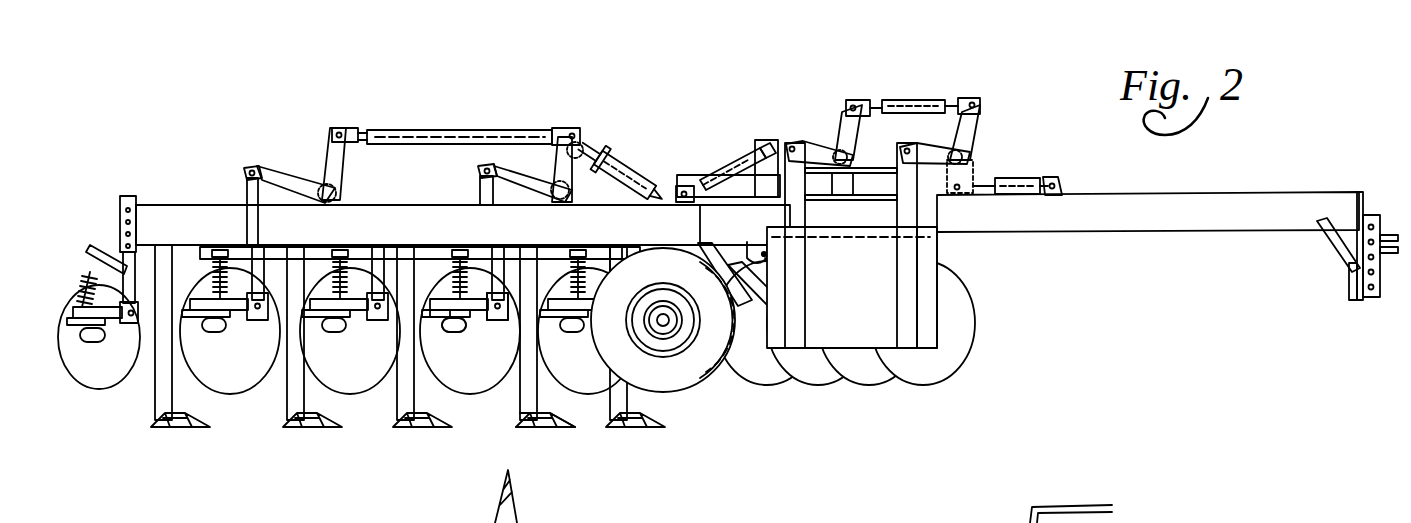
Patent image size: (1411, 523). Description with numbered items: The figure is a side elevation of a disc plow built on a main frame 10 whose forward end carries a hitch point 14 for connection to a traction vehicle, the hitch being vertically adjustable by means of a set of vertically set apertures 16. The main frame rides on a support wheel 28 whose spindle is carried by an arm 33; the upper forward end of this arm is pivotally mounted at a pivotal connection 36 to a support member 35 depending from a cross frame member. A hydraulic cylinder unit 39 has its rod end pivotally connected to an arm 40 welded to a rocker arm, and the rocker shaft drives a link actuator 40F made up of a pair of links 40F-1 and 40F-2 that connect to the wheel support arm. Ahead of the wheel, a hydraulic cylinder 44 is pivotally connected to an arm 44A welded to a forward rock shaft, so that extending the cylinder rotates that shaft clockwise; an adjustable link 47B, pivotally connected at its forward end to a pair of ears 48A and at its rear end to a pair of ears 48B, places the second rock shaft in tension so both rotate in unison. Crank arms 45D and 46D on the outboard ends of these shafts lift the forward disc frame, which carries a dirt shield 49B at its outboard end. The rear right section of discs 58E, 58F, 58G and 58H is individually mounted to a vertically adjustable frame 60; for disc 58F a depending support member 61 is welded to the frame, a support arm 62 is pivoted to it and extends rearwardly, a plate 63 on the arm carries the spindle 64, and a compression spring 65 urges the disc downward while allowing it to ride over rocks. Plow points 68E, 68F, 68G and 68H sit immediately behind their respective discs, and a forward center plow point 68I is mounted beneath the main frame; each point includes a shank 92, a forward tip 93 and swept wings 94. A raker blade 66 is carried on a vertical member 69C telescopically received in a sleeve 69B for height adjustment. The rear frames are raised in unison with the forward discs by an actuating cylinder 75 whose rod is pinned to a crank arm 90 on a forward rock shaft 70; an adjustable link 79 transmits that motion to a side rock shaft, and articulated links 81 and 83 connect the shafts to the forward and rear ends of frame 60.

The main frame 10 is at (1165, 190).
The hitch point 14 is at (1373, 208).
The vertically set apertures 16 is at (1380, 253).
The second support wheel 28 is at (683, 392).
The arm 33 is at (710, 366).
The support member 35 is at (740, 245).
The pivotal connection 36 is at (766, 255).
The hydraulic cylinder unit 39 is at (745, 165).
The arm 40 is at (775, 140).
The link actuator 40F is at (700, 175).
The link 40F-1 is at (735, 190).
The link 40F-2 is at (700, 248).
The hydraulic cylinder 44 is at (1028, 178).
The arm 44A is at (968, 180).
The crank arm 45D is at (940, 140).
The crank arm 46D is at (818, 140).
The adjustable link 47B is at (915, 95).
The ears 48A is at (982, 118).
The ears 48B is at (838, 115).
The dirt shield 49B is at (882, 280).
The disc 58E is at (594, 361).
The disc 58F is at (470, 398).
The disc 58G is at (368, 368).
The disc 58H is at (248, 368).
The frame 60 is at (372, 248).
The depending support member 61 is at (518, 248).
The support arm 62 is at (484, 318).
The plate 63 is at (440, 333).
The spindle 64 is at (462, 338).
The compression spring 65 is at (437, 248).
The raker blade 66 is at (83, 378).
The plow point 68E is at (524, 428).
The plow point 68F is at (405, 420).
The plow point 68G is at (296, 425).
The plow point 68H is at (165, 422).
The forward center plow point 68I is at (634, 431).
The sleeve 69B is at (120, 212).
The vertical member 69C is at (140, 330).
The forward rock shaft 70 is at (556, 165).
The actuating cylinder 75 is at (628, 160).
The adjustable link 79 is at (450, 126).
The articulated link 81 is at (470, 192).
The link 83 is at (234, 183).
The crank arm 90 is at (572, 168).
The shank 92 is at (522, 395).
The forward tip 93 is at (578, 393).
The wing 94 is at (556, 428).